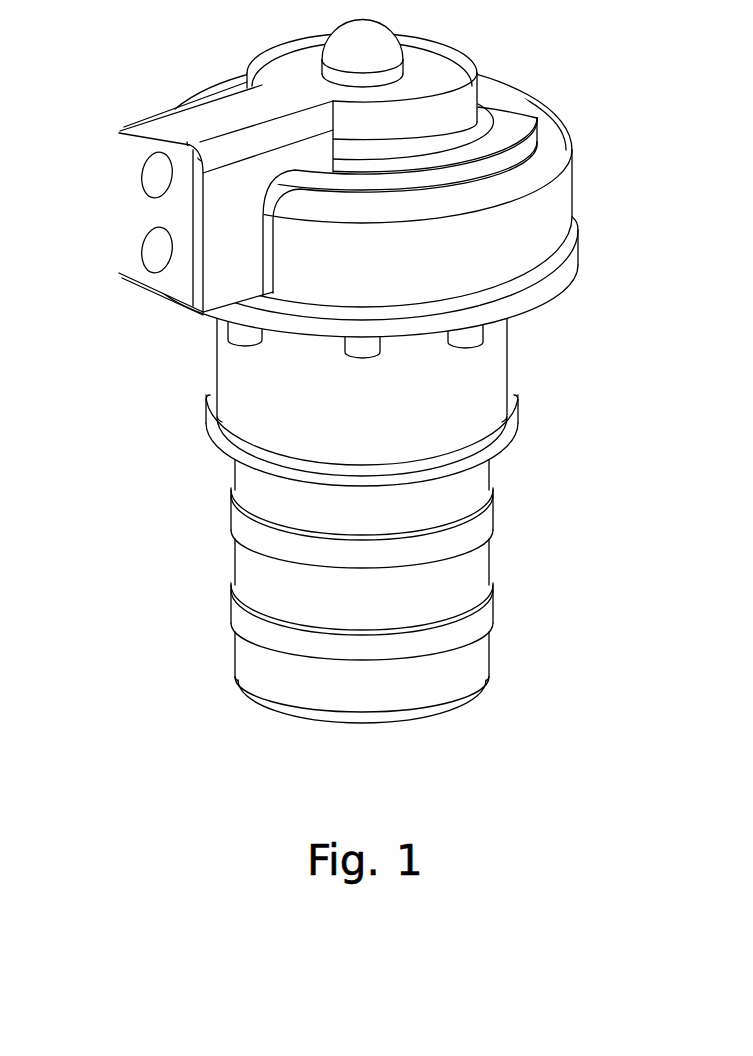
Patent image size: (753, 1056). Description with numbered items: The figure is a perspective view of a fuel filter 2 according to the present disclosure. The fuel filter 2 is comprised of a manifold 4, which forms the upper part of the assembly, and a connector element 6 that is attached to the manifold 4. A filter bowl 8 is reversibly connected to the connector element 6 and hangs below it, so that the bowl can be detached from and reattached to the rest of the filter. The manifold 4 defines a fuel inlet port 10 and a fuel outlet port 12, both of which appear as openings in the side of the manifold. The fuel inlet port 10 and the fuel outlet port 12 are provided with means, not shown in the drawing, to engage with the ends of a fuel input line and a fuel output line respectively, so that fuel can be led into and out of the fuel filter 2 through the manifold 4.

The fuel filter 2 is at (595, 366).
The manifold 4 is at (595, 132).
The connector element 6 is at (602, 256).
The filter bowl 8 is at (527, 558).
The fuel inlet port 10 is at (150, 172).
The fuel outlet port 12 is at (157, 250).